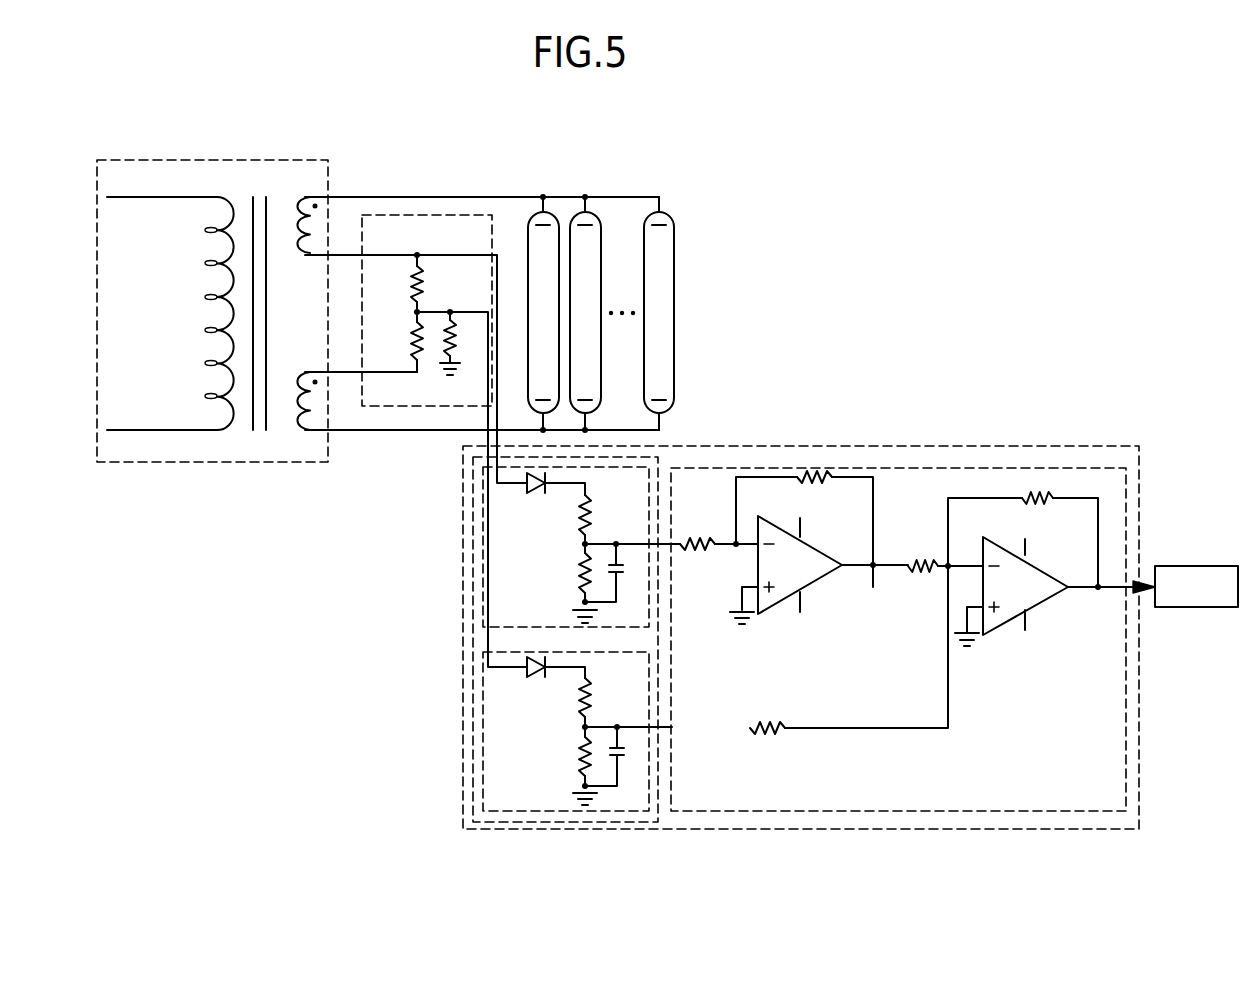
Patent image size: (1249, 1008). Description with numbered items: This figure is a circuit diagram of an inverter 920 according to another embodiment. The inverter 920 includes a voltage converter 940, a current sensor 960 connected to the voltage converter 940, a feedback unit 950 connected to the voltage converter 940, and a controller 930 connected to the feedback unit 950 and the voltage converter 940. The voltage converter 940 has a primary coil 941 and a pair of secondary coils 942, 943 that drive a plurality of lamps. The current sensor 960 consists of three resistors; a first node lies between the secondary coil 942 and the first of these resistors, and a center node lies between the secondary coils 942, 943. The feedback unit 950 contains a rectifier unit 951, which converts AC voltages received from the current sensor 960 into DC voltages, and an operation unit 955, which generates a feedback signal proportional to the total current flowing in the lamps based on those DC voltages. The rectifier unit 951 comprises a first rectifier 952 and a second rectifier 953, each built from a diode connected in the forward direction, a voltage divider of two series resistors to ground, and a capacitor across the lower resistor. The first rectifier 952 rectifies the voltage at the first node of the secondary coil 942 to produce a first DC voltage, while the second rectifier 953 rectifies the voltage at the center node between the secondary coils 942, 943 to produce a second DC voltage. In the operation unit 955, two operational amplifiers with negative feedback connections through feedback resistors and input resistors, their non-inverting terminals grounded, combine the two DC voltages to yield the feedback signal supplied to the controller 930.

The inverter 920 is at (697, 131).
The controller 930 is at (1162, 592).
The voltage converter 940 is at (212, 317).
The primary coil 941 is at (217, 197).
The secondary coil 942 is at (308, 195).
The secondary coil 943 is at (307, 430).
The feedback unit 950 is at (779, 627).
The rectifier unit 951 is at (538, 661).
The first rectifier 952 is at (483, 530).
The second rectifier 953 is at (568, 812).
The operation unit 955 is at (900, 467).
The current sensor 960 is at (425, 213).